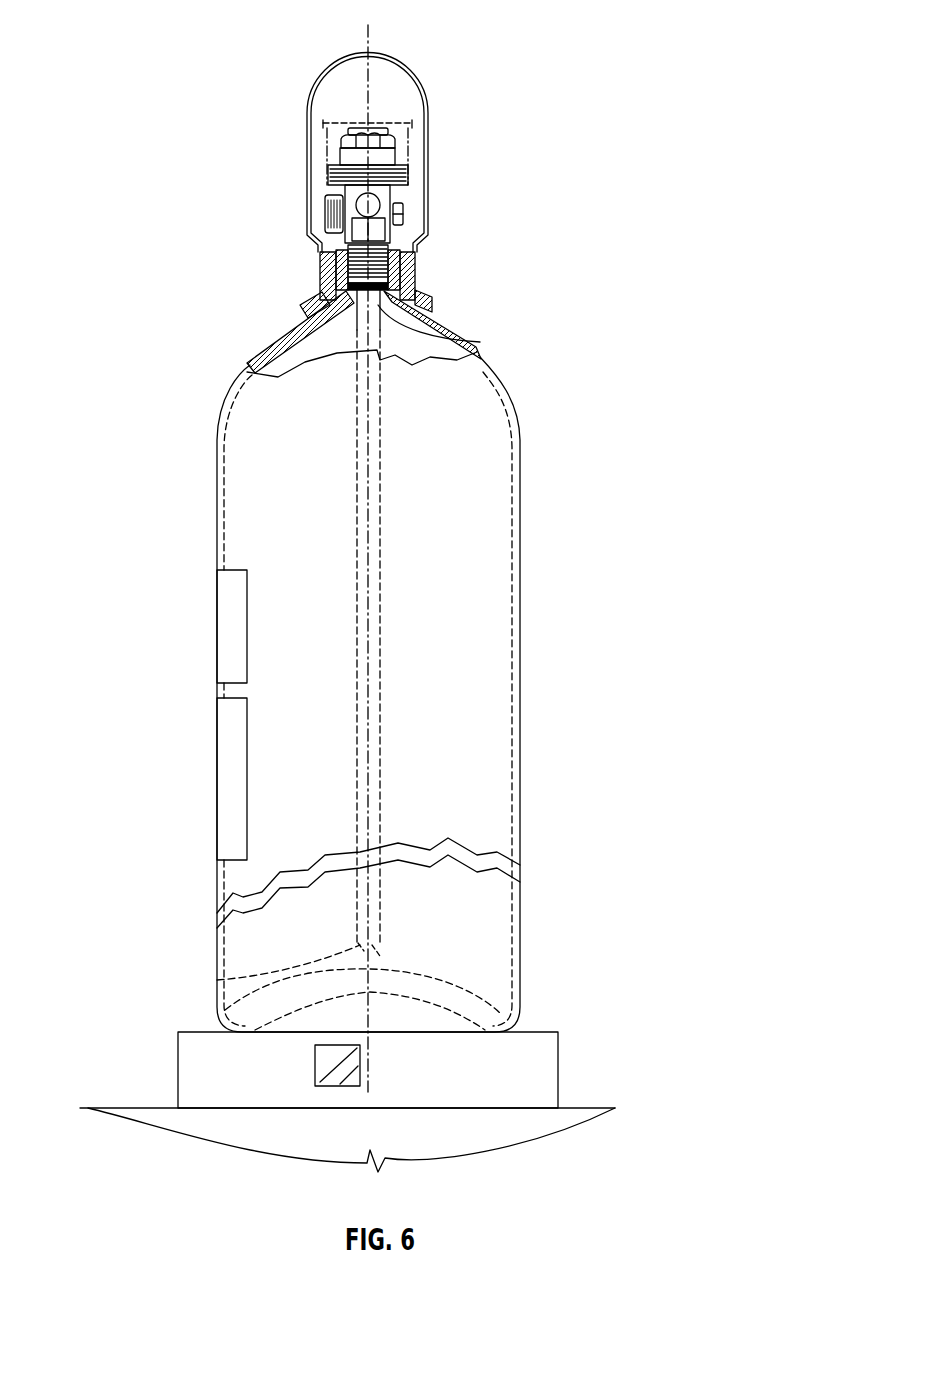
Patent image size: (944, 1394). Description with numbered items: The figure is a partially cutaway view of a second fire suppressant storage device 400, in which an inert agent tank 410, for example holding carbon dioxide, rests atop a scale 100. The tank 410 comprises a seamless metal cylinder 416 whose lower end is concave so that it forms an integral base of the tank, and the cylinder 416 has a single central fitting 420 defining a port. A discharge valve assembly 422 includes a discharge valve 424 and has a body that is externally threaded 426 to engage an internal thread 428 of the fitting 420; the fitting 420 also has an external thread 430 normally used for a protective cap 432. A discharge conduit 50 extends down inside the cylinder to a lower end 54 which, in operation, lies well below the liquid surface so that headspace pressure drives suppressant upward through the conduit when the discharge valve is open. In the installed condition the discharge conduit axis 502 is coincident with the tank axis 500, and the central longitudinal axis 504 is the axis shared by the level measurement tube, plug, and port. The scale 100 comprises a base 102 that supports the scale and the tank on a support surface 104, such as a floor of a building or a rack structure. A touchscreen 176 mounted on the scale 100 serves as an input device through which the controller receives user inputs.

The fire suppressant storage device 400 is at (200, 107).
The inert agent tank 410 is at (580, 173).
The discharge valve assembly 422 is at (398, 91).
The protective cap 432 is at (428, 112).
The central fitting 420 is at (406, 236).
The discharge valve 424 is at (330, 211).
The external thread 430 is at (415, 270).
The external thread 426 is at (415, 280).
The internal thread 428 is at (465, 338).
The seamless metal cylinder 416 is at (523, 383).
The discharge conduit 50 is at (380, 710).
The lower end 54 is at (223, 978).
The scale 100 is at (580, 1042).
The base 102 is at (545, 1069).
The tank axis 500 is at (362, 1058).
The discharge conduit axis 502 is at (337, 1065).
The central longitudinal axis 504 is at (312, 1080).
The support surface 104 is at (143, 1108).
The touchscreen 176 is at (340, 1072).